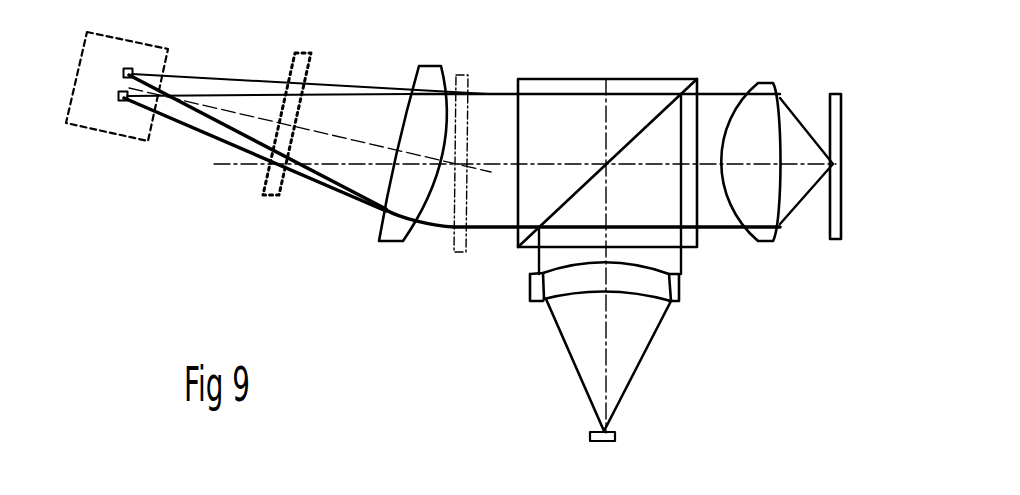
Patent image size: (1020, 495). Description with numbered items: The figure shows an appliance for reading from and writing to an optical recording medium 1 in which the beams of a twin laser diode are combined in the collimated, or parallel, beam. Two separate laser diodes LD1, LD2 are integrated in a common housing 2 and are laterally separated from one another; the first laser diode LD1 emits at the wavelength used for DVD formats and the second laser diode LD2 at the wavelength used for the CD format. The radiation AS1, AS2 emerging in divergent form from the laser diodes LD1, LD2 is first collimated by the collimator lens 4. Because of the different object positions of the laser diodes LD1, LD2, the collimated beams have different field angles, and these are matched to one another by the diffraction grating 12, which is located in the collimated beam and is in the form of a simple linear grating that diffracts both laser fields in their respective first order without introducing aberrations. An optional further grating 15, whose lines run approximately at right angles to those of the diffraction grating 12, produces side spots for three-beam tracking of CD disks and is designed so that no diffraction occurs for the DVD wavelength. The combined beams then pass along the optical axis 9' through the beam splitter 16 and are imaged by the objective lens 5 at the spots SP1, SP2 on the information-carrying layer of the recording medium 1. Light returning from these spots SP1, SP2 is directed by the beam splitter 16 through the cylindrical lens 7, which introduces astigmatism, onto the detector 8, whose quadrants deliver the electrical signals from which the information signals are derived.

The common housing 2 is at (123, 36).
The first laser diode LD1 is at (112, 92).
The second laser diode LD2 is at (115, 66).
The first scanning beam AS1 is at (176, 112).
The second scanning beam AS2 is at (242, 47).
The further grating 15 is at (297, 56).
The collimator lens 4 is at (383, 225).
The diffraction grating 12 is at (457, 242).
The beam splitter 16 is at (600, 78).
The optical axis 9' is at (607, 163).
The objective lens 5 is at (751, 84).
The first spot SP1 is at (844, 102).
The second spot SP2 is at (829, 157).
The optical recording medium 1 is at (833, 228).
The cylindrical lens 7 is at (672, 286).
The detector 8 is at (610, 425).